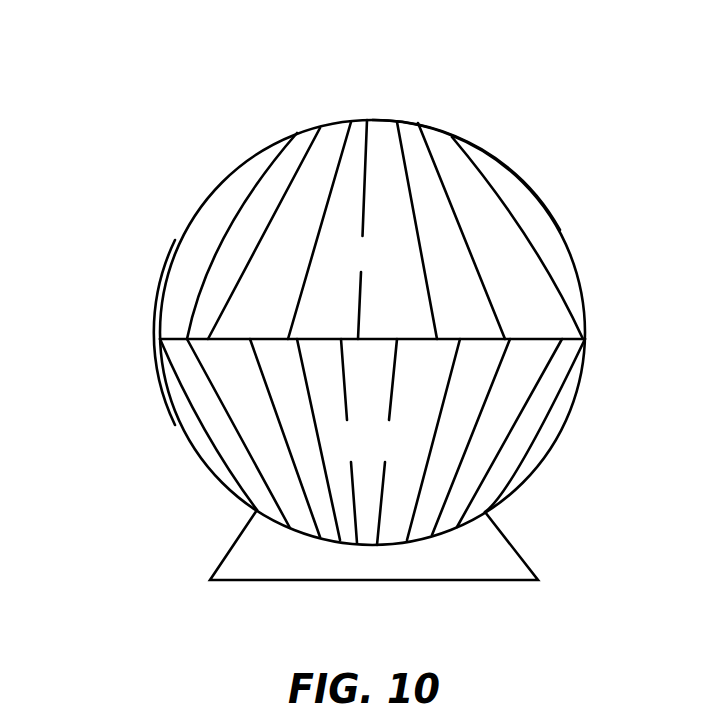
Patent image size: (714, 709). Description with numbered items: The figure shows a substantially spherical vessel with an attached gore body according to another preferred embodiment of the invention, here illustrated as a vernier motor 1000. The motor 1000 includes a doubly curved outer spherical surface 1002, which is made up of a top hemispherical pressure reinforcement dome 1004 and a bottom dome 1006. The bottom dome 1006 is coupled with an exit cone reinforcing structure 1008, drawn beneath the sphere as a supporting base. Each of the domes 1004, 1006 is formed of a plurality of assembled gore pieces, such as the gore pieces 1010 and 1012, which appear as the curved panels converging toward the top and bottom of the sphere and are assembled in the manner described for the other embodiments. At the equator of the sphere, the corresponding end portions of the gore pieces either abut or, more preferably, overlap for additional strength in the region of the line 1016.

The vernier motor 1000 is at (552, 202).
The outer spherical surface 1002 is at (465, 128).
The top hemispherical pressure reinforcement dome 1004 is at (405, 266).
The bottom dome 1006 is at (397, 457).
The exit cone reinforcing structure 1008 is at (527, 562).
The gore piece 1010 is at (262, 206).
The gore piece 1012 is at (192, 380).
The line 1016 is at (168, 305).